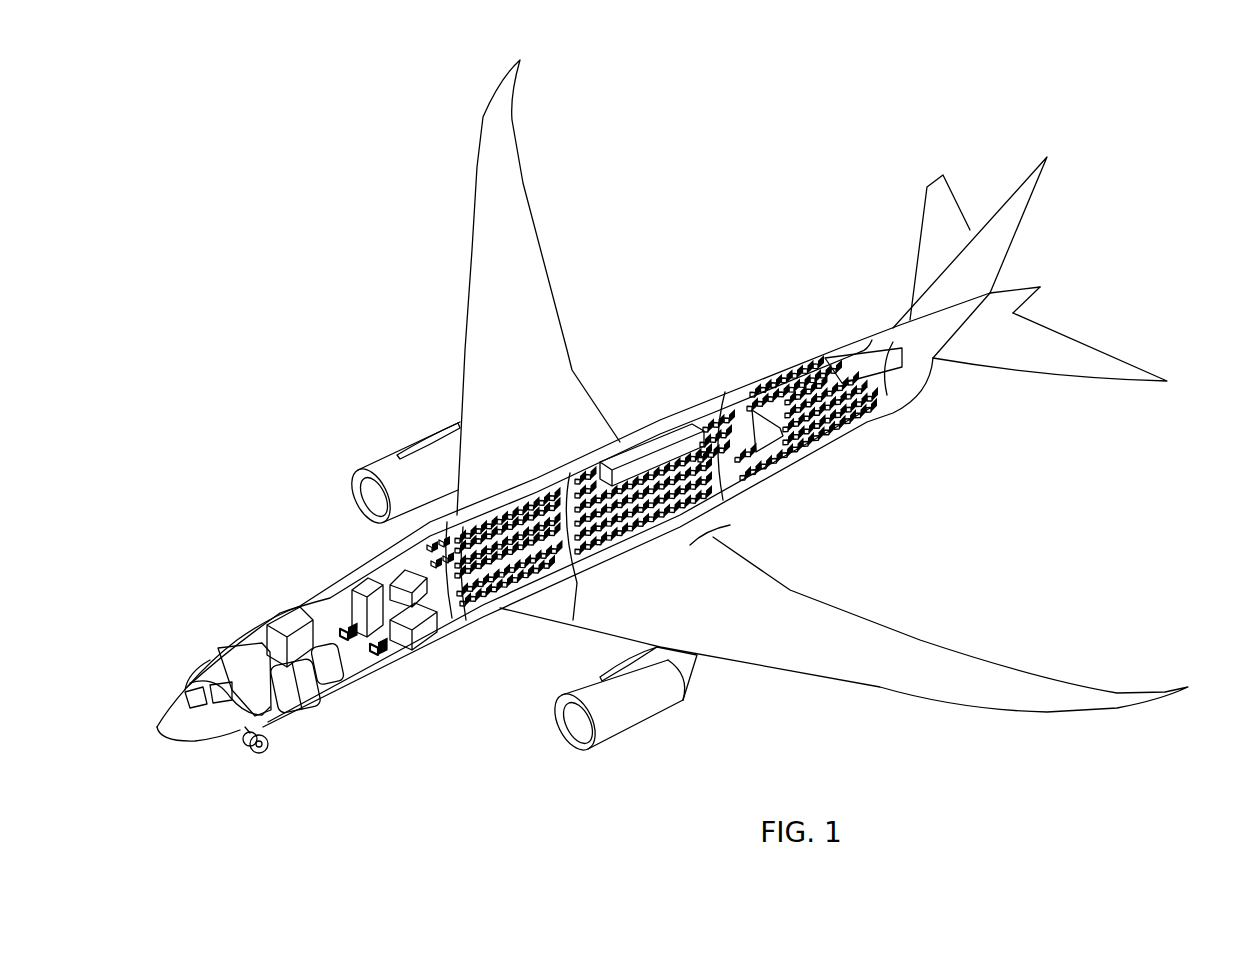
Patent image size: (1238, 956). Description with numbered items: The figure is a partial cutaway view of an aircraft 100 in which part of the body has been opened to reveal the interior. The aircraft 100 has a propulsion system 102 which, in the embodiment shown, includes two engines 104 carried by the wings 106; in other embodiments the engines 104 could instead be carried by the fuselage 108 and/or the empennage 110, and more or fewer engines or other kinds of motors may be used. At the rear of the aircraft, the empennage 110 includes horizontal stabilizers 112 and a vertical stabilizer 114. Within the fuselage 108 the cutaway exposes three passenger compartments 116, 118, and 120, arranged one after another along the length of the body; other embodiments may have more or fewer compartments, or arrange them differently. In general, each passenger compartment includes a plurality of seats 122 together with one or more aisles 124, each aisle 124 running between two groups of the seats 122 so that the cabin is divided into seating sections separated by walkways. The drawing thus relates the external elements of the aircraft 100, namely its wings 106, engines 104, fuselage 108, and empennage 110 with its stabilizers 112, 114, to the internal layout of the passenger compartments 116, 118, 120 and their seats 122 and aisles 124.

The aircraft 100 is at (282, 149).
The propulsion system 102 is at (336, 494).
The engines 104 is at (391, 465).
The wings 106 is at (487, 262).
The fuselage 108 is at (333, 576).
The empennage 110 is at (801, 298).
The horizontal stabilizers 112 is at (920, 222).
The vertical stabilizer 114 is at (1012, 192).
The passenger compartment 116 is at (474, 615).
The passenger compartment 118 is at (710, 537).
The passenger compartment 120 is at (830, 452).
The seats 122 is at (585, 470).
The aisles 124 is at (453, 543).